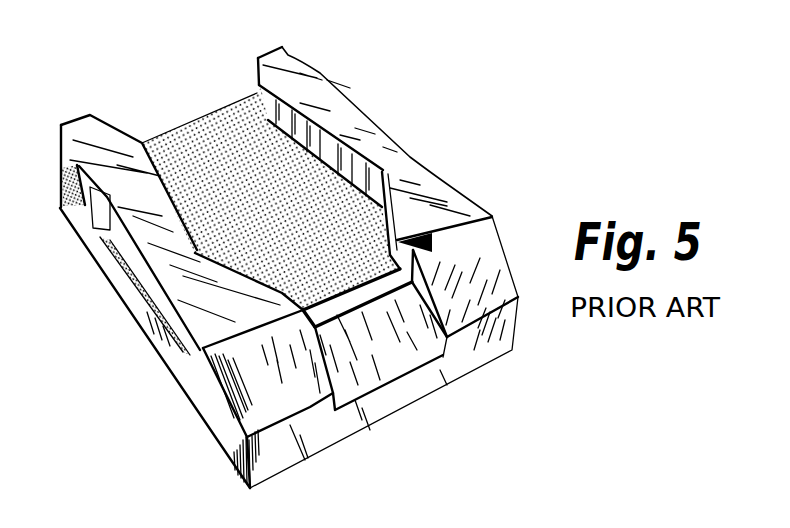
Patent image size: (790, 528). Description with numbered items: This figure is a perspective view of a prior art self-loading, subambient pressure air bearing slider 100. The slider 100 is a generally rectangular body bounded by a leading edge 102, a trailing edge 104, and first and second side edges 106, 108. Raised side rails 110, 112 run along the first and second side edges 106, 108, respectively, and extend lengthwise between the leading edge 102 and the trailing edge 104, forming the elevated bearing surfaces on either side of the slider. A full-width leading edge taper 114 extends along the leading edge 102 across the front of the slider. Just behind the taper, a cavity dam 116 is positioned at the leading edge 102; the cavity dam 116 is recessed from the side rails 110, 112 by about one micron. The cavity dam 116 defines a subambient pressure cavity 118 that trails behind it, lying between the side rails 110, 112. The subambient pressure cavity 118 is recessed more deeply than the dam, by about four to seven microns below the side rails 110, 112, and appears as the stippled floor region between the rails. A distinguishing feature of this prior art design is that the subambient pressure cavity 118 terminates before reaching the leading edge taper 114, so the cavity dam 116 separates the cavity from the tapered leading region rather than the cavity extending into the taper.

The slider 100 is at (515, 178).
The leading edge 102 is at (300, 457).
The trailing edge 104 is at (207, 115).
The first side edge 106 is at (207, 362).
The second side edge 108 is at (488, 204).
The raised side rail 110 is at (70, 104).
The raised side rail 112 is at (321, 73).
The leading edge taper 114 is at (243, 440).
The cavity dam 116 is at (380, 360).
The subambient pressure cavity 118 is at (263, 137).